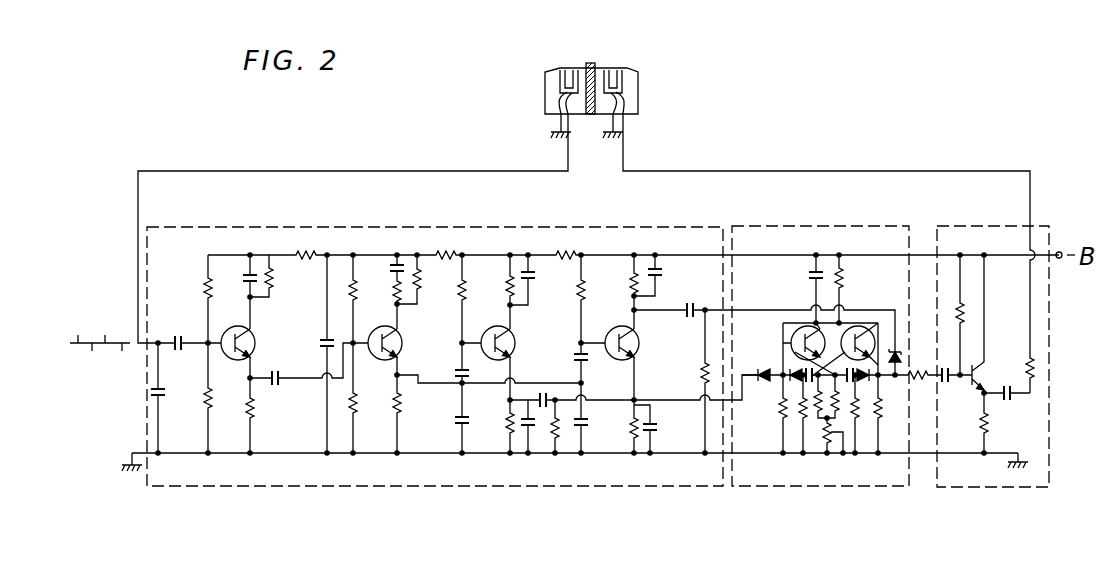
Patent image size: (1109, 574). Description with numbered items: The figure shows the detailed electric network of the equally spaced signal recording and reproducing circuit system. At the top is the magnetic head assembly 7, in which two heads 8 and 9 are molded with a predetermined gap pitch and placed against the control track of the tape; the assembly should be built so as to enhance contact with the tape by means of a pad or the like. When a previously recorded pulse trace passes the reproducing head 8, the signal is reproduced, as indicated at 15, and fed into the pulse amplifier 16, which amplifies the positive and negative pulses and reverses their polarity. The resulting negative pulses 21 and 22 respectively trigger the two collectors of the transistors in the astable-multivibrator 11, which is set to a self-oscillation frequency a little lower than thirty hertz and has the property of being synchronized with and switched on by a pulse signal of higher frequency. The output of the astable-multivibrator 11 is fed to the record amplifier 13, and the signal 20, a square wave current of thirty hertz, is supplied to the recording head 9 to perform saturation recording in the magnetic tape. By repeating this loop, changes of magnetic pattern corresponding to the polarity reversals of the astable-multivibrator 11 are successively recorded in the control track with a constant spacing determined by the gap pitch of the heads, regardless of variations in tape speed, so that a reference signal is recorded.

The magnetic head assembly 7 is at (605, 83).
The head 8 is at (583, 64).
The head 9 is at (612, 64).
The reproduced signal 15 is at (344, 171).
The signal 20 is at (907, 171).
The pulse amplifier 16 is at (359, 485).
The astable-multivibrator 11 is at (819, 371).
The record amplifier 13 is at (957, 485).
The negative pulse 21 is at (906, 366).
The negative pulse 22 is at (784, 364).